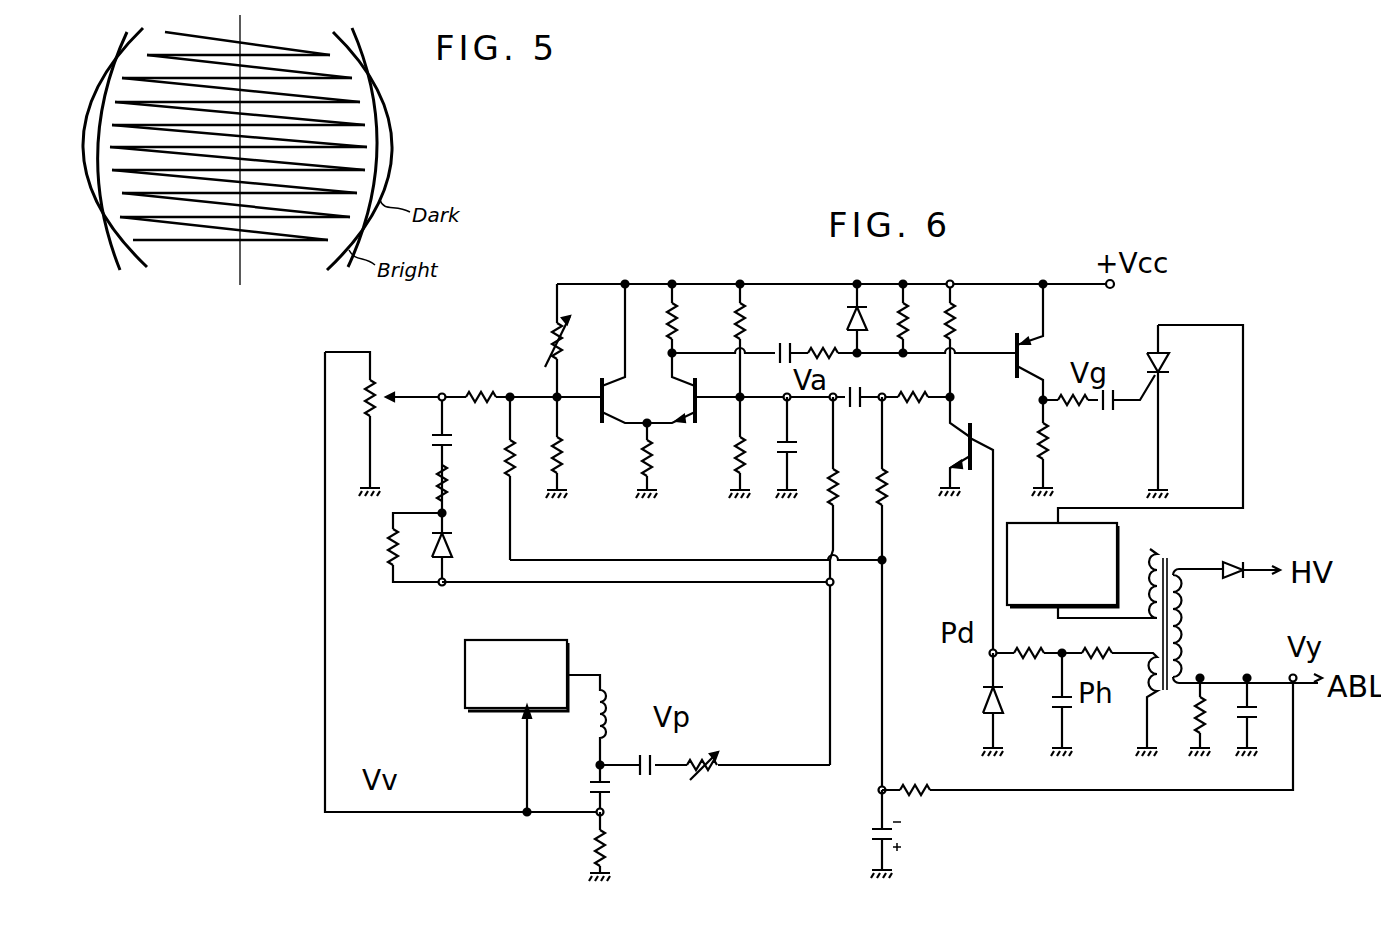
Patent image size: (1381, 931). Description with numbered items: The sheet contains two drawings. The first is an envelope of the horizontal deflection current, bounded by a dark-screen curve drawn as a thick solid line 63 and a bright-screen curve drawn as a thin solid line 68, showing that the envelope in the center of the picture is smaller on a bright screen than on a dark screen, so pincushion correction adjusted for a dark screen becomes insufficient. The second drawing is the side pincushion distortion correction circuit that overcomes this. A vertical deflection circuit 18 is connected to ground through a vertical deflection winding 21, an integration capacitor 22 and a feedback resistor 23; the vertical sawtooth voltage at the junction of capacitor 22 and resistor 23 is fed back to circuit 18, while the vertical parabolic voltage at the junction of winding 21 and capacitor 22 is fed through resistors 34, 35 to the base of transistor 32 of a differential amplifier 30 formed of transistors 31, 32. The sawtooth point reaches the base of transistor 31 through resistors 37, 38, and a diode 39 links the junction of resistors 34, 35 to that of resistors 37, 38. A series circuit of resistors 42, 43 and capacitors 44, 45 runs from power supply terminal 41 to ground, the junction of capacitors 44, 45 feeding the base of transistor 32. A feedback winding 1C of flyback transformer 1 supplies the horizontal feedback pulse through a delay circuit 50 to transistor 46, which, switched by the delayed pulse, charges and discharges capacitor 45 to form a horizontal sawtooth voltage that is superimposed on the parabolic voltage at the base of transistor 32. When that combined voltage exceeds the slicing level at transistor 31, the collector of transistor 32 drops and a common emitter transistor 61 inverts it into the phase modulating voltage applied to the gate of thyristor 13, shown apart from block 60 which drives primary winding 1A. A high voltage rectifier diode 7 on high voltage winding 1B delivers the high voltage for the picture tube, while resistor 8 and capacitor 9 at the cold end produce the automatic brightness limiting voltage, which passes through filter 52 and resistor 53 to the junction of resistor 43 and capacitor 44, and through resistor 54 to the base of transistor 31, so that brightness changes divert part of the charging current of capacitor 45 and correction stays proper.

In FIG. 5, the thick solid line 63 is at (95, 208).
In FIG. 5, the thin solid line 68 is at (127, 262).
In FIG. 6, the flyback transformer 1 is at (1202, 642).
In FIG. 6, the primary winding 1A is at (1150, 552).
In FIG. 6, the high voltage winding 1B is at (1190, 632).
In FIG. 6, the feedback winding 1C is at (1147, 688).
In FIG. 6, the high voltage rectifier diode 7 is at (1251, 593).
In FIG. 6, the resistor 8 is at (1205, 726).
In FIG. 6, the capacitor 9 is at (1261, 717).
In FIG. 6, the thyristor 13 is at (1170, 368).
In FIG. 6, the vertical deflection circuit 18 is at (516, 700).
In FIG. 6, the vertical deflection winding 21 is at (590, 732).
In FIG. 6, the integration capacitor 22 is at (608, 795).
In FIG. 6, the feedback resistor 23 is at (610, 850).
In FIG. 6, the differential amplifier 30 is at (655, 391).
In FIG. 6, the transistor 31 is at (603, 427).
In FIG. 6, the transistor 32 is at (702, 427).
In FIG. 6, the resistor 34 is at (742, 793).
In FIG. 6, the resistor 35 is at (836, 498).
In FIG. 6, the resistor 37 is at (365, 404).
In FIG. 6, the resistor 38 is at (485, 405).
In FIG. 6, the diode 39 is at (447, 545).
In FIG. 6, the power supply terminal 41 is at (1109, 290).
In FIG. 6, the resistor 42 is at (953, 318).
In FIG. 6, the resistor 43 is at (918, 426).
In FIG. 6, the capacitor 44 is at (858, 408).
In FIG. 6, the capacitor 45 is at (790, 456).
In FIG. 6, the transistor 46 is at (973, 433).
In FIG. 6, the delay circuit 50 is at (1047, 722).
In FIG. 6, the filter 52 is at (972, 862).
In FIG. 6, the resistor 53 is at (886, 504).
In FIG. 6, the resistor 54 is at (506, 460).
In FIG. 6, the block 60 is at (1050, 606).
In FIG. 6, the common emitter transistor 61 is at (1072, 380).